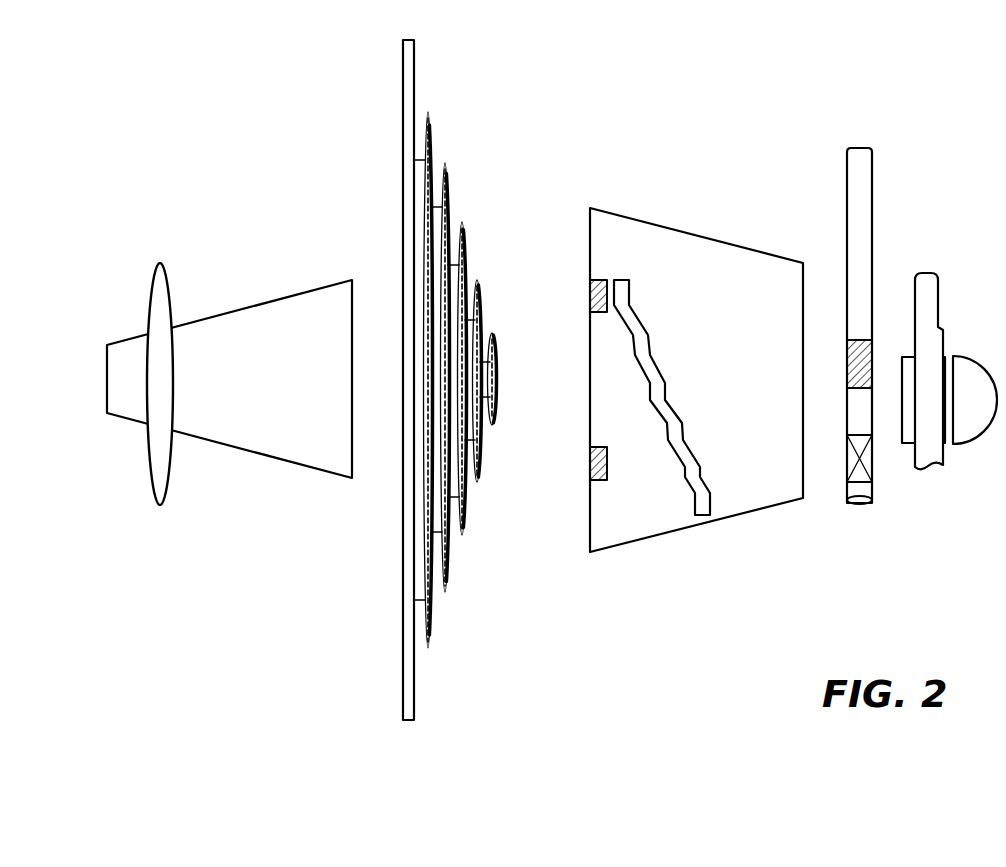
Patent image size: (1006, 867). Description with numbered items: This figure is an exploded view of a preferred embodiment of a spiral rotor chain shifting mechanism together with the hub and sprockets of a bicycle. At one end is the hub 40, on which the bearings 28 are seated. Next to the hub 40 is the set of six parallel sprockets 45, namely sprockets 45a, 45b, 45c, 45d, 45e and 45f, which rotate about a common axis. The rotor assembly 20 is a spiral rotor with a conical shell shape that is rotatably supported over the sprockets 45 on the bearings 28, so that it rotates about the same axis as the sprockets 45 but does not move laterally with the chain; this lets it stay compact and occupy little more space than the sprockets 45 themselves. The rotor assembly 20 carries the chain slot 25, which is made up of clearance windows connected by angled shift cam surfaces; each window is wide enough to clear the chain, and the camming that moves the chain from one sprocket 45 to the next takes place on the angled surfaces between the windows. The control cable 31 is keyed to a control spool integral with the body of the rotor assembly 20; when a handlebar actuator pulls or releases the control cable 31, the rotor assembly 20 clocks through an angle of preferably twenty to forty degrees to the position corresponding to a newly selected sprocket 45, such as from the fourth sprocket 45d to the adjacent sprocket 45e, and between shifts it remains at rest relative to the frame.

The hub 40 is at (257, 277).
The sprocket 45 is at (514, 119).
The sprocket 45a is at (415, 87).
The sprocket 45b is at (433, 144).
The sprocket 45c is at (450, 190).
The fourth sprocket 45d is at (467, 255).
The sprocket 45e is at (482, 312).
The sprocket 45f is at (497, 365).
The rotor assembly 20 is at (708, 212).
The chain slot 25 is at (721, 502).
The bearing 28 is at (589, 290).
The control cable 31 is at (872, 163).